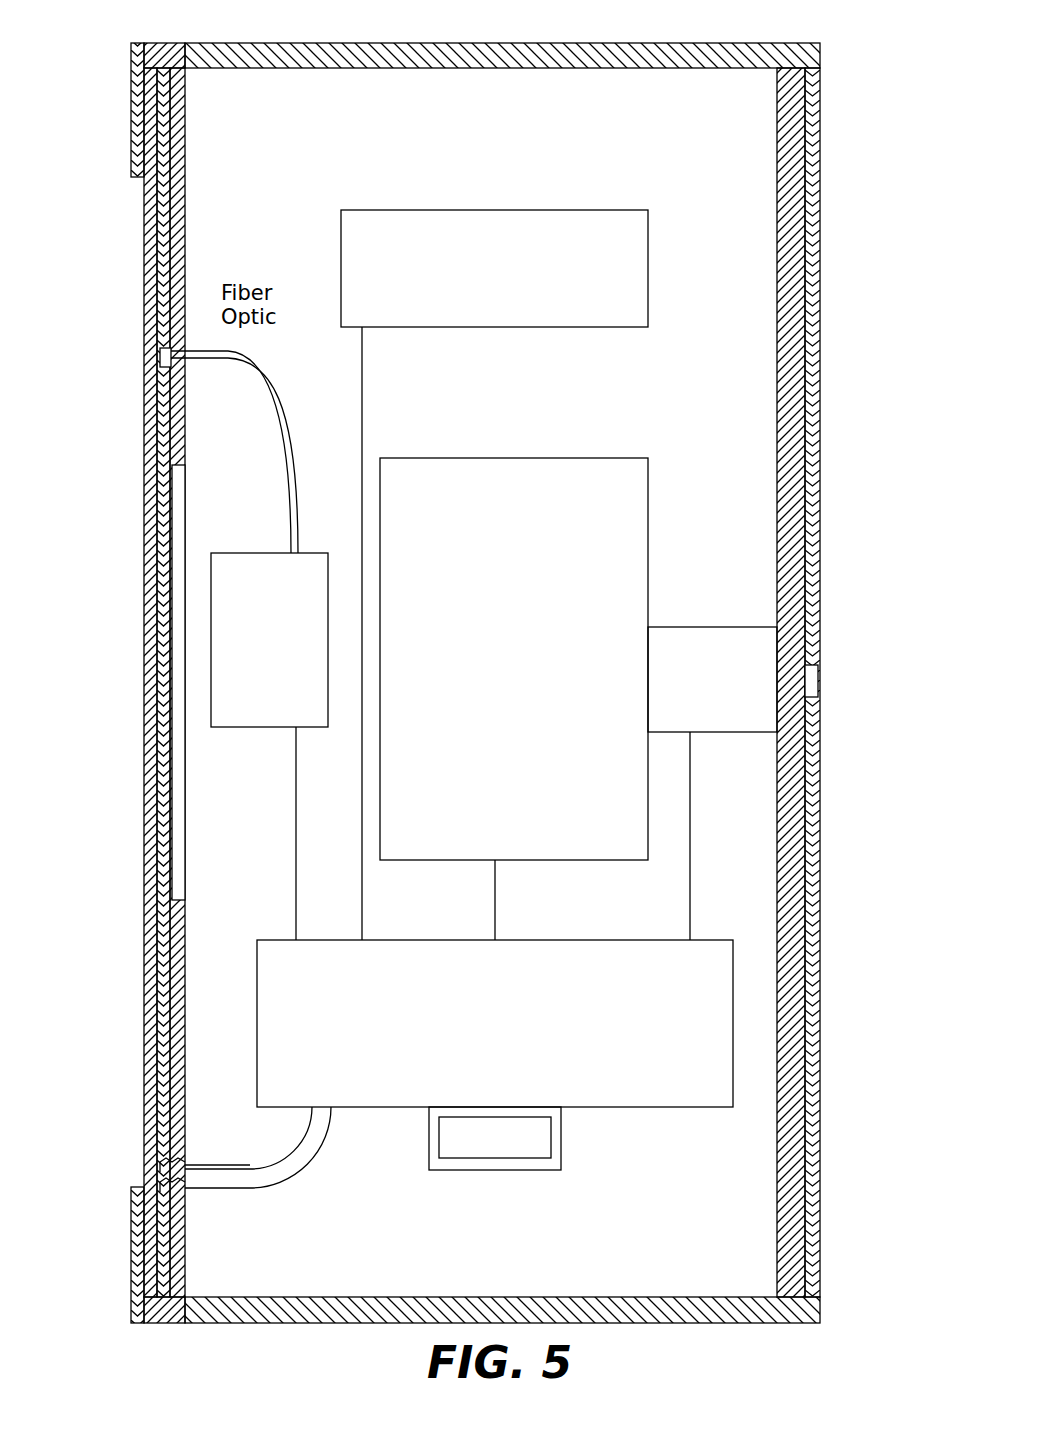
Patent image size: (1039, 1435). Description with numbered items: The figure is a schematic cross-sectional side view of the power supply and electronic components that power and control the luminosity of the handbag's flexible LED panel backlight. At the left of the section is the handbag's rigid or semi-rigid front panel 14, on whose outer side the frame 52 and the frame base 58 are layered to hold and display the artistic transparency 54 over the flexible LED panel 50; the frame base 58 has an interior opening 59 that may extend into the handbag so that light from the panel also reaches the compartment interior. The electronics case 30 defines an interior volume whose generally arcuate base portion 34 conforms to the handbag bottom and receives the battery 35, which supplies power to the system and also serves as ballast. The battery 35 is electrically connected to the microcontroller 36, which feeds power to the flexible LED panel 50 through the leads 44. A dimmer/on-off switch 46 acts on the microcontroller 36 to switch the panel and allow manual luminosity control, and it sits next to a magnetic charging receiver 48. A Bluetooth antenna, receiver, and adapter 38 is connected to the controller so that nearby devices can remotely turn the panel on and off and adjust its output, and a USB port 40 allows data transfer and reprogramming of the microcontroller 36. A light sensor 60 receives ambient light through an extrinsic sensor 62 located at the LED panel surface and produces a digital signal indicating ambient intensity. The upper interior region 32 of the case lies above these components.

The front panel 14 is at (120, 440).
The electronics case 30 is at (790, 55).
The upper compartment 32 is at (737, 375).
The base portion 34 is at (735, 1252).
The battery 35 is at (650, 578).
The microcontroller 36 is at (648, 1052).
The Bluetooth antenna, receiver, and adapter 38 is at (592, 210).
The USB port 40 is at (562, 1157).
The leads 44 is at (255, 1183).
The dimmer/on-off switch 46 is at (816, 683).
The magnetic charging receiver 48 is at (748, 672).
The flexible LED panel 50 is at (163, 300).
The frame 52 is at (137, 125).
The artistic transparency 54 is at (150, 245).
The frame base 58 is at (163, 43).
The interior opening 59 is at (175, 470).
The light sensor 60 is at (240, 642).
The extrinsic sensor 62 is at (160, 355).